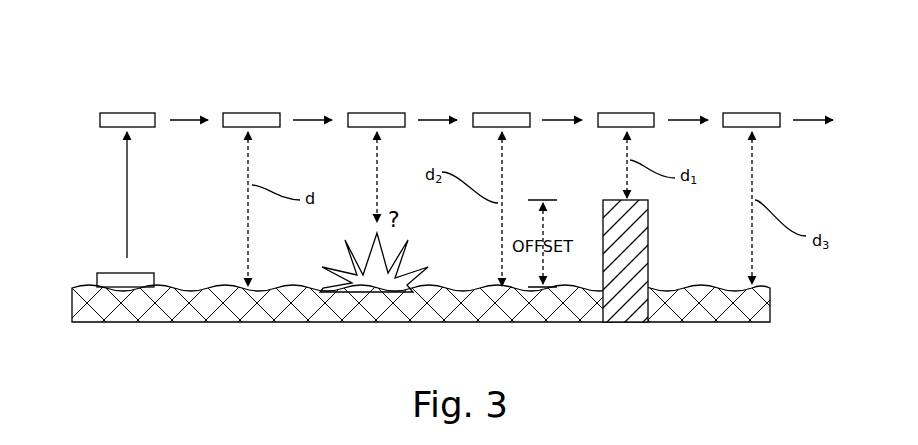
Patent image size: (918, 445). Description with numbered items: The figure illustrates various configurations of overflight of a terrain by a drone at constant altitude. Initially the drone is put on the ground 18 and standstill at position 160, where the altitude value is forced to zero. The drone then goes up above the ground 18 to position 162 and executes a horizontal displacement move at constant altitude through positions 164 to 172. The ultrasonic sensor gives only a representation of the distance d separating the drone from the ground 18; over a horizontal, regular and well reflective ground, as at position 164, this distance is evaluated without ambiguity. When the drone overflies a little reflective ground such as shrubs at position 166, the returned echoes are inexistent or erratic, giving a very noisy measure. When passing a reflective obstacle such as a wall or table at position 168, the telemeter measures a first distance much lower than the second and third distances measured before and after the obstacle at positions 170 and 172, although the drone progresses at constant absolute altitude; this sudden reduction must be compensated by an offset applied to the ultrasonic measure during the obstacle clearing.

The ground 18 is at (225, 288).
The position of the drone on the ground 160 is at (108, 272).
The position of the drone going up 162 is at (125, 113).
The position of the drone in horizontal displacement 164 is at (250, 113).
The position of the drone over a little reflective ground 166 is at (378, 113).
The position of the drone over an obstacle 168 is at (628, 113).
The position of the drone before the obstacle 170 is at (513, 128).
The position of the drone after the obstacle 172 is at (762, 128).